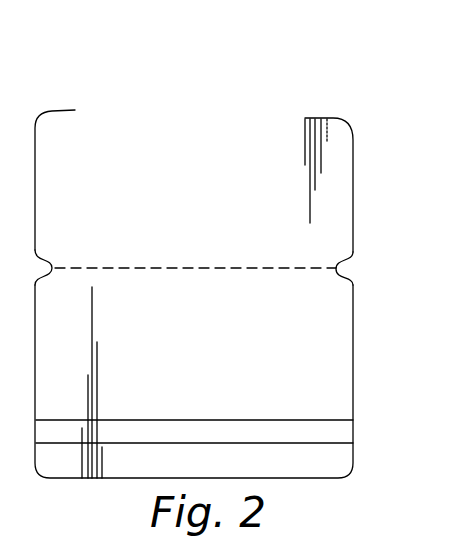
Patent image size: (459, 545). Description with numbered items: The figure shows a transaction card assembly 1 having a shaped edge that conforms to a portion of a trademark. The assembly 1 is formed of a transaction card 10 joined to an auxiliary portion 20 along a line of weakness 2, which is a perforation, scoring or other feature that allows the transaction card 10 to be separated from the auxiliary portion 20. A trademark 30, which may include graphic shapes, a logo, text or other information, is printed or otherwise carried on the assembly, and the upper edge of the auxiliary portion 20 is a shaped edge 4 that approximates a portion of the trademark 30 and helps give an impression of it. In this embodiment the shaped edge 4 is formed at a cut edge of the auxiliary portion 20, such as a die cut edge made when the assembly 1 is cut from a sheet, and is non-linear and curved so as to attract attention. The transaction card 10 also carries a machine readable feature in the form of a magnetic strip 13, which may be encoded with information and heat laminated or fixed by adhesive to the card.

The assembly 1 is at (48, 77).
The trademark 30 is at (106, 81).
The shaped edge 4 is at (197, 97).
The auxiliary portion 20 is at (343, 145).
The line of weakness 2 is at (305, 269).
The transaction card 10 is at (337, 390).
The magnetic strip 13 is at (345, 432).